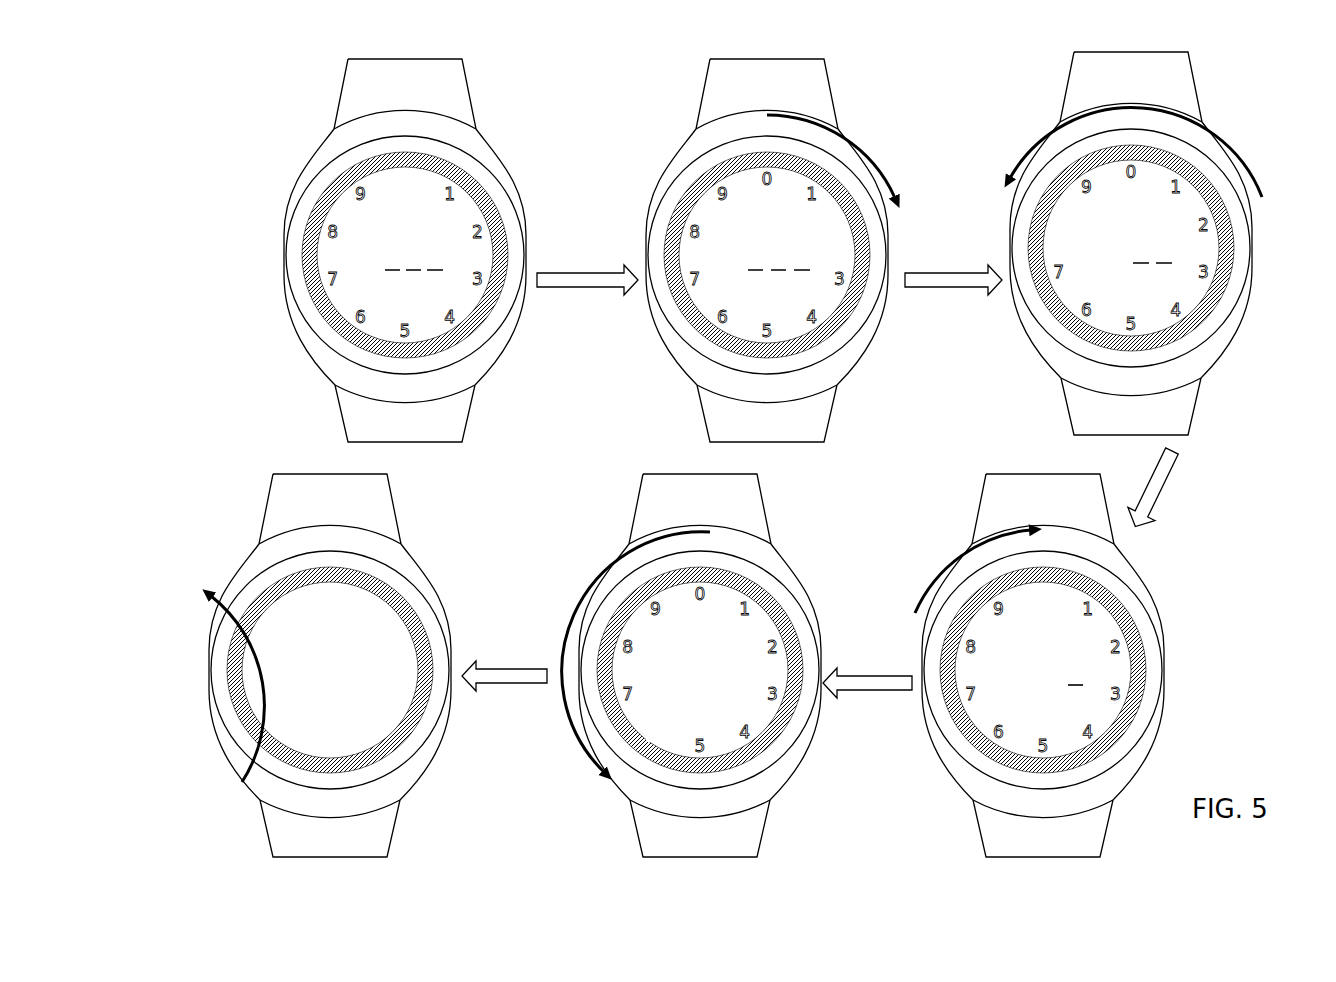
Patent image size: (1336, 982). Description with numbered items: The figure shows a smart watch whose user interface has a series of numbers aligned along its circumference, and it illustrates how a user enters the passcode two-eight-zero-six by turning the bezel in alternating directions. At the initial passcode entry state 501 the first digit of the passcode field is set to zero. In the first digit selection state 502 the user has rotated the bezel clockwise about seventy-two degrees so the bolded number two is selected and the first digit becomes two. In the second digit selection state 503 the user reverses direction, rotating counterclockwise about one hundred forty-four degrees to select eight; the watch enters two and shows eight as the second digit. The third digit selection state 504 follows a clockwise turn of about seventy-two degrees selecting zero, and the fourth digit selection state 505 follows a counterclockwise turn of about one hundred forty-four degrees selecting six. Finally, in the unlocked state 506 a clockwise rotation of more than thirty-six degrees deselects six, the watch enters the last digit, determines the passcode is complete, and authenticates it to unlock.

The initial passcode entry state 501 is at (484, 97).
The first digit selection state 502 is at (846, 95).
The second digit selection state 503 is at (1205, 105).
The third digit selection state 504 is at (1156, 600).
The fourth digit selection state 505 is at (811, 589).
The unlocked state 506 is at (413, 544).